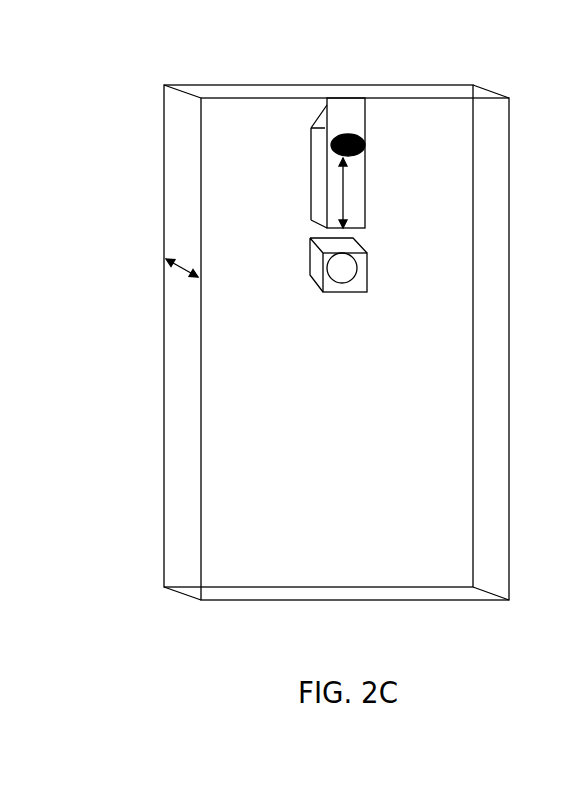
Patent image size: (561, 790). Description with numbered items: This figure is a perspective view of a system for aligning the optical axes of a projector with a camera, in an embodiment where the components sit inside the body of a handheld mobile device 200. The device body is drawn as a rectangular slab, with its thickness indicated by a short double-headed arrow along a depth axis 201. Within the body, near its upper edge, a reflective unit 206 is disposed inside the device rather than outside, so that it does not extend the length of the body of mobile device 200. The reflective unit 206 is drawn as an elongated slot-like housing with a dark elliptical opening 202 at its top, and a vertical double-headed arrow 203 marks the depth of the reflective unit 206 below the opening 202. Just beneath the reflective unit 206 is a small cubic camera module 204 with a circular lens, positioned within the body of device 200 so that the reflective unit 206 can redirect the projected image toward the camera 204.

The mobile device 200 is at (177, 542).
The housing wall thickness 201 is at (178, 268).
The opening 202 is at (365, 140).
The slot depth 203 is at (347, 185).
The camera module 204 is at (323, 262).
The reflective unit 206 is at (350, 102).